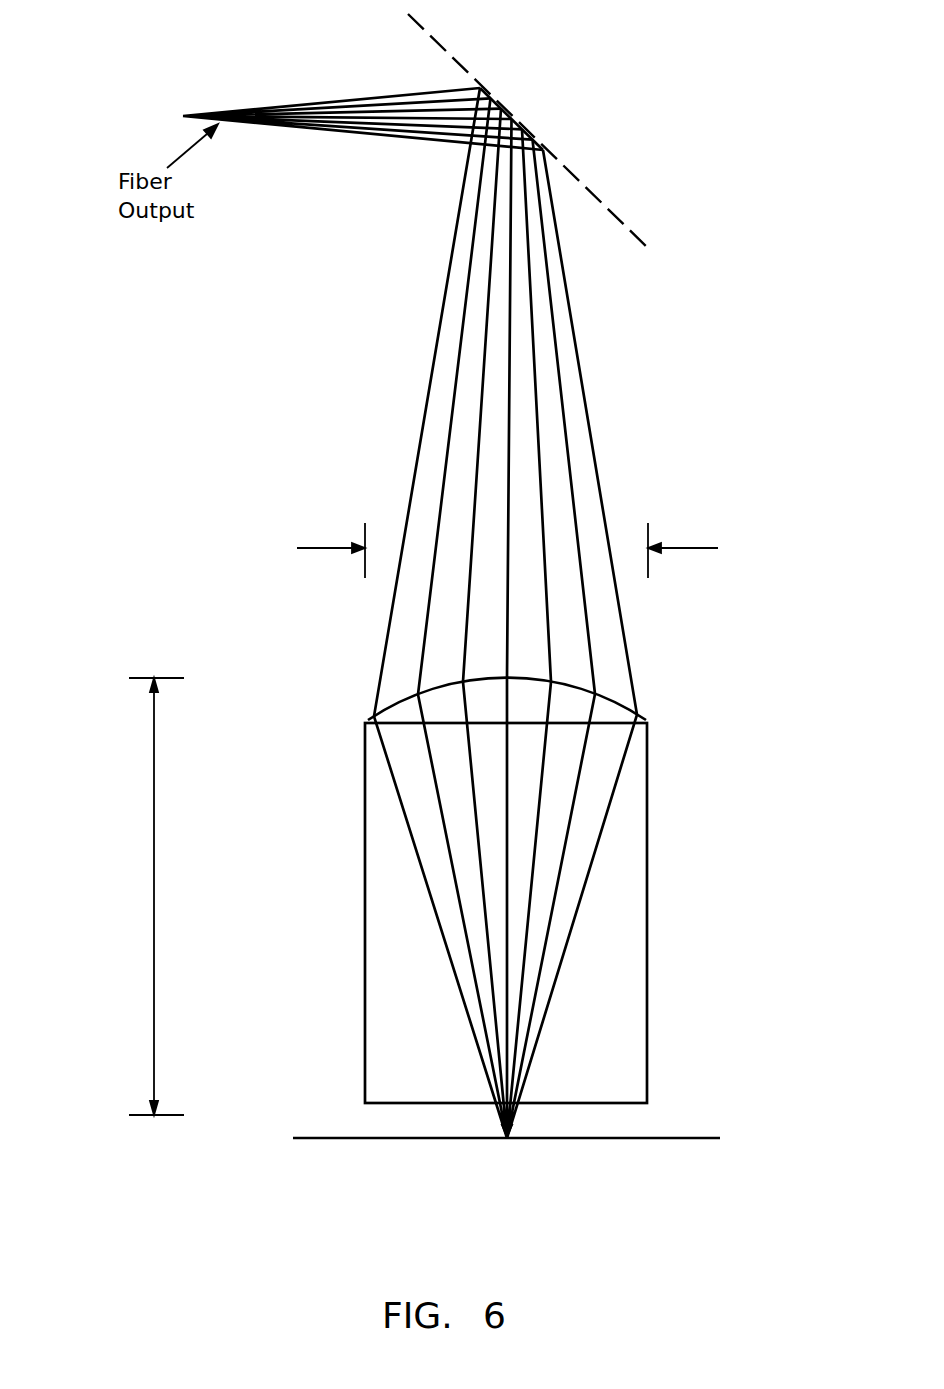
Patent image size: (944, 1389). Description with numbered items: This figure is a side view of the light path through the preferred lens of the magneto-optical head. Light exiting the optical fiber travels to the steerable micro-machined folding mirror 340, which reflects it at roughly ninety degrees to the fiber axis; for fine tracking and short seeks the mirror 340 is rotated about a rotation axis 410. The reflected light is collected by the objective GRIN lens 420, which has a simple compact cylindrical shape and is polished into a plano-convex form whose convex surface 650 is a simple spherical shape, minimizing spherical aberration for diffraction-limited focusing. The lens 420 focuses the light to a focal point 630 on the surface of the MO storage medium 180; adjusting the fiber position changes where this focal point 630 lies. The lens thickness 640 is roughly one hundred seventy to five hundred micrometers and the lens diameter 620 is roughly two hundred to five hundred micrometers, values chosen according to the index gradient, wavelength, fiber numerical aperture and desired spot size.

The MO storage medium 180 is at (370, 1138).
The steerable micro-machined folding mirror 340 is at (497, 107).
The rotation axis 410 is at (582, 187).
The GRIN lens 420 is at (615, 960).
The lens diameter 620 is at (535, 550).
The focal point of light 630 is at (507, 1138).
The thickness 640 is at (153, 955).
The convex surface 650 is at (370, 718).